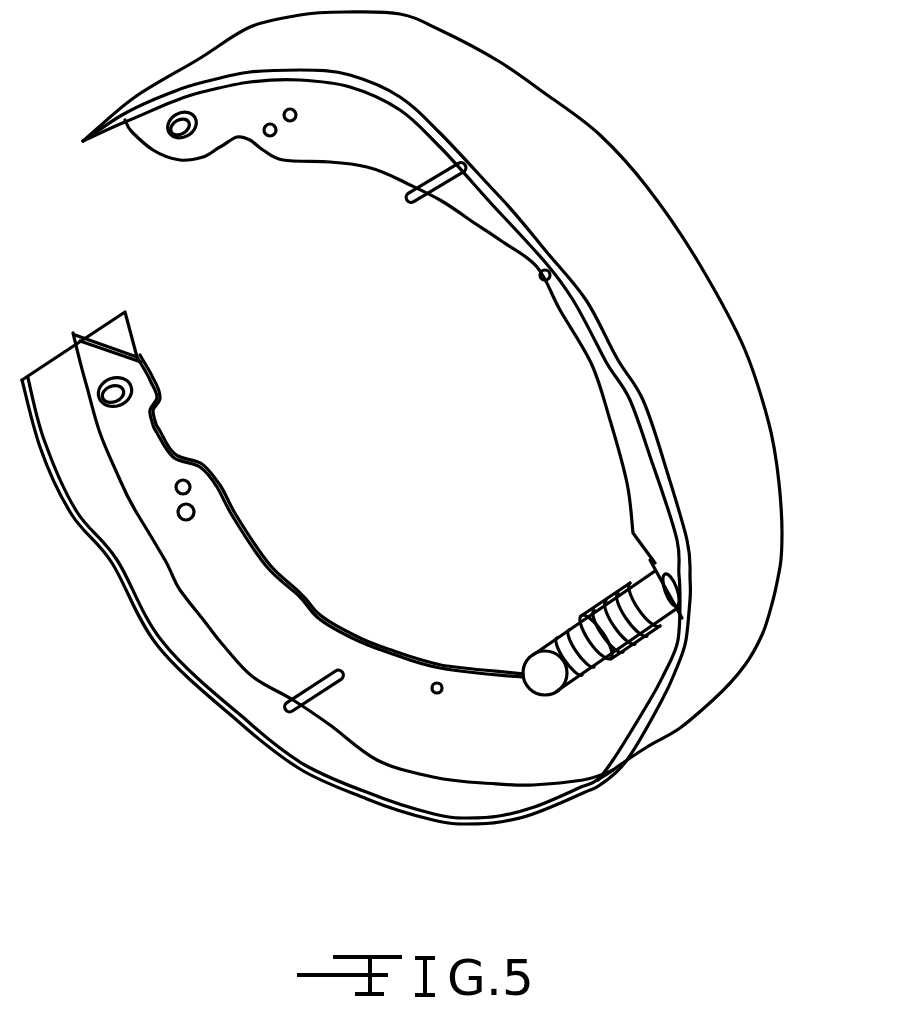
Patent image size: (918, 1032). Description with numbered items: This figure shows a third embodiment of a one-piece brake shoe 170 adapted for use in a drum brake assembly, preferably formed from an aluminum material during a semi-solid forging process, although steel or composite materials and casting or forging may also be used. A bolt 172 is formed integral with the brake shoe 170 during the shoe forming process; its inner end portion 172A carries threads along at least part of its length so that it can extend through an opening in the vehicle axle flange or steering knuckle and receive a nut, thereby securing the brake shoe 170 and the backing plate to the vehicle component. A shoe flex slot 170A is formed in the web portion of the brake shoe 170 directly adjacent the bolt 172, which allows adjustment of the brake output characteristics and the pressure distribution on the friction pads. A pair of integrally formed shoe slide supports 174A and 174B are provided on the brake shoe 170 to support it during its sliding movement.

The brake shoe 170 is at (652, 190).
The shoe flex slot 170A is at (663, 612).
The bolt 172 is at (567, 622).
The inner end portion 172A is at (590, 675).
The shoe slide support 174A is at (320, 687).
The shoe slide support 174B is at (430, 200).